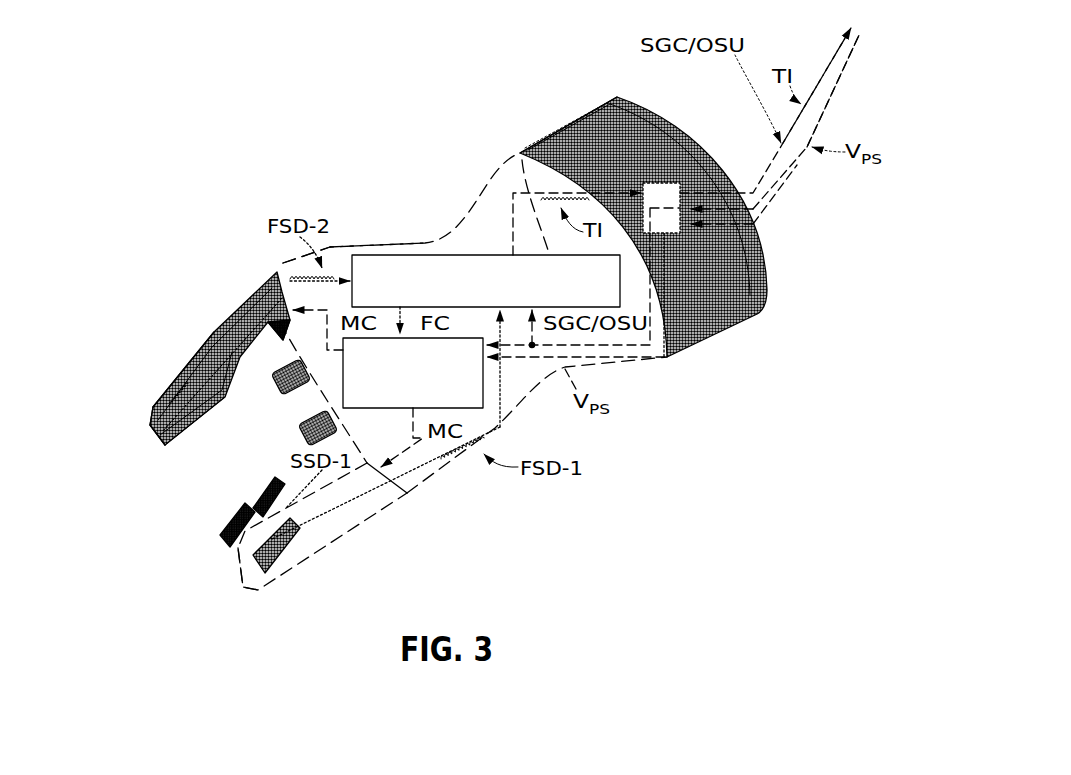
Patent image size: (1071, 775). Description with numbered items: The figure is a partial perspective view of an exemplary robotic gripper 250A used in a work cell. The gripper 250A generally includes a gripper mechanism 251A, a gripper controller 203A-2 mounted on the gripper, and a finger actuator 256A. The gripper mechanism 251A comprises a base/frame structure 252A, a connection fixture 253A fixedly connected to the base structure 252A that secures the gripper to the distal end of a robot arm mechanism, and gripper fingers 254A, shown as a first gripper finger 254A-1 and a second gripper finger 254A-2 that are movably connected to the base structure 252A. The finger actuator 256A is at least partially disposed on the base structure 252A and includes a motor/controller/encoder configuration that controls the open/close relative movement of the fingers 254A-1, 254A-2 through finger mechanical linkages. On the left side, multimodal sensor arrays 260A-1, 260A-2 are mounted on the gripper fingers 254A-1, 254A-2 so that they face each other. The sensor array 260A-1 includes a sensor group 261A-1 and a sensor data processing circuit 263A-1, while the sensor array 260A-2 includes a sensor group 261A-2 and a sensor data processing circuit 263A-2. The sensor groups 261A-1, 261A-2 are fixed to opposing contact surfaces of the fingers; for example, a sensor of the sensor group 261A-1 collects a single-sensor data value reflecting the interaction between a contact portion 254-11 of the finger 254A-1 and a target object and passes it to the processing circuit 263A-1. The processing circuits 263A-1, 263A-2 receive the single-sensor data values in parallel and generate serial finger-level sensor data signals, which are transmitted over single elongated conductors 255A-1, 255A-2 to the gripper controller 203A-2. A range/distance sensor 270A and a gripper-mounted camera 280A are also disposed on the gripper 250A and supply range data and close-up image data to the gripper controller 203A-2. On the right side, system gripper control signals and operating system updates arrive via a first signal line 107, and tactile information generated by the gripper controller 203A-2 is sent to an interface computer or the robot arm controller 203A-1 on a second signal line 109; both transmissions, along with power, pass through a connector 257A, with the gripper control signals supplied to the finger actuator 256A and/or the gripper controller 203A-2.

The robotic gripper 250A is at (207, 162).
The gripper mechanism 251A is at (313, 153).
The base/frame structure 252A is at (383, 238).
The connection fixture 253A is at (532, 138).
The gripper fingers 254A is at (221, 310).
The gripper finger 254A-1 is at (354, 543).
The gripper finger 254A-2 is at (211, 333).
The contact portion 254-11 is at (231, 573).
The elongated conductor 255A-1 is at (435, 468).
The elongated conductor 255A-2 is at (282, 283).
The finger actuator 256A is at (438, 404).
The connector 257A is at (674, 180).
The multimodal sensor array 260A-1 is at (166, 525).
The multimodal sensor array 260A-2 is at (45, 473).
The sensor group 261A-1 is at (252, 490).
The sensor group 261A-2 is at (206, 424).
The sensor data processing circuit 263A-1 is at (254, 559).
The sensor data processing circuit 263A-2 is at (161, 431).
The range/distance sensor 270A is at (269, 389).
The gripper-mounted camera 280A is at (299, 441).
The robot arm controller 203A-1 is at (796, 114).
The gripper controller 203A-2 is at (607, 301).
The first signal line 107 is at (849, 60).
The second signal line 109 is at (836, 58).